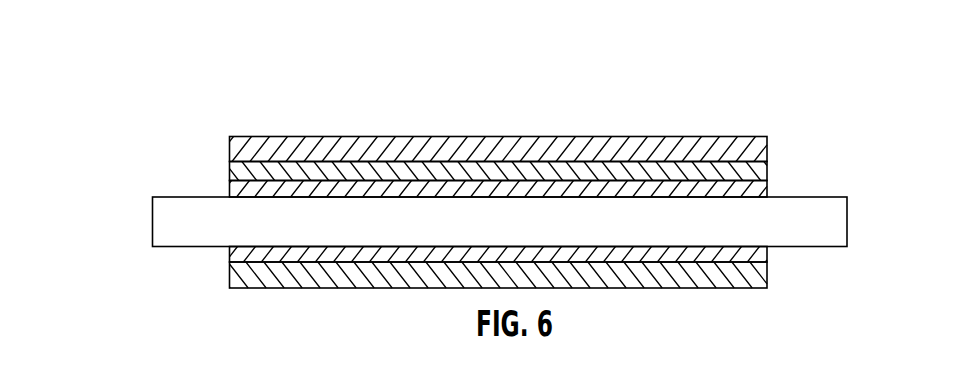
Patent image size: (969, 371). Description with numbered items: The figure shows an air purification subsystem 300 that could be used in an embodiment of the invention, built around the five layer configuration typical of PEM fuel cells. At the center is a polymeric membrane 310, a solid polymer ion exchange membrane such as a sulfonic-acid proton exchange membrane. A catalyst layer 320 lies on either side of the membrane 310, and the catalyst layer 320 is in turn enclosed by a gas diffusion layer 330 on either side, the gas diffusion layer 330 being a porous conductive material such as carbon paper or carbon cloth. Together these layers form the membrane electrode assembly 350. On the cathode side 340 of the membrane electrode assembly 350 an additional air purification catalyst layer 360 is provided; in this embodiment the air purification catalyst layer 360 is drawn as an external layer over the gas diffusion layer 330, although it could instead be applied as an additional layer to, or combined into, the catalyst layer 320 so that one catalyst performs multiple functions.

The air purification subsystem 300 is at (537, 88).
The polymeric membrane 310 is at (839, 197).
The catalyst layer 320 is at (767, 189).
The gas diffusion layer 330 is at (767, 170).
The cathode side 340 is at (308, 120).
The membrane electrode assembly 350 is at (135, 208).
The air purification catalyst layer 360 is at (744, 136).